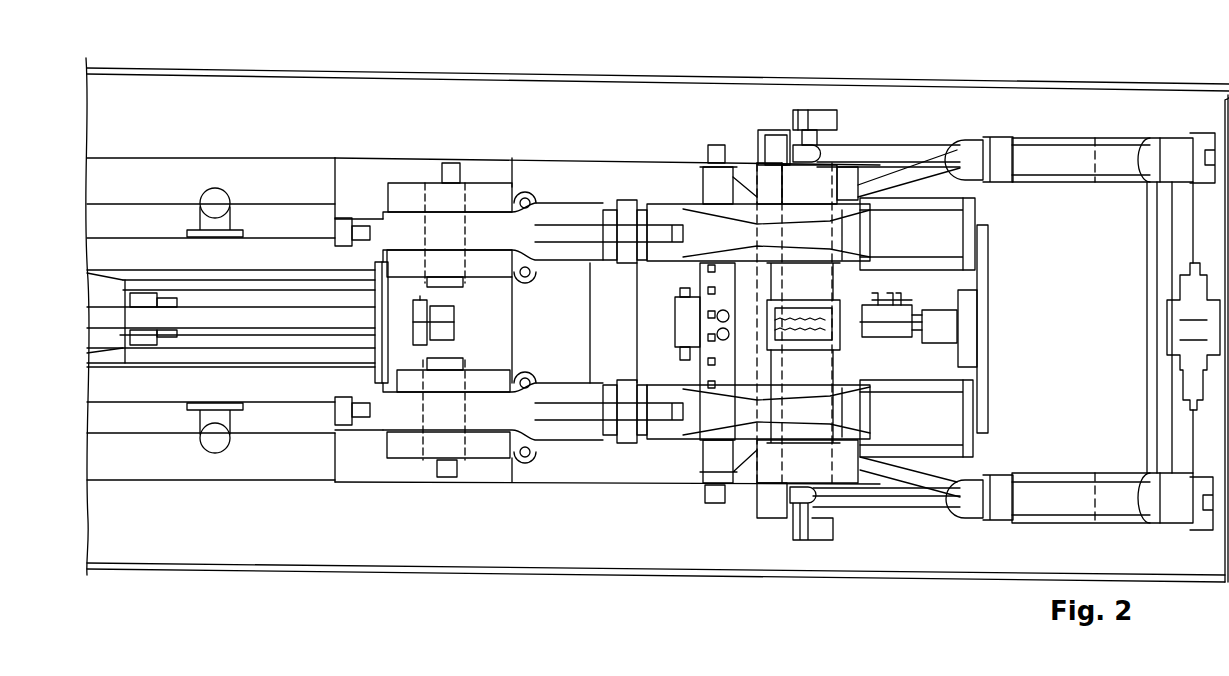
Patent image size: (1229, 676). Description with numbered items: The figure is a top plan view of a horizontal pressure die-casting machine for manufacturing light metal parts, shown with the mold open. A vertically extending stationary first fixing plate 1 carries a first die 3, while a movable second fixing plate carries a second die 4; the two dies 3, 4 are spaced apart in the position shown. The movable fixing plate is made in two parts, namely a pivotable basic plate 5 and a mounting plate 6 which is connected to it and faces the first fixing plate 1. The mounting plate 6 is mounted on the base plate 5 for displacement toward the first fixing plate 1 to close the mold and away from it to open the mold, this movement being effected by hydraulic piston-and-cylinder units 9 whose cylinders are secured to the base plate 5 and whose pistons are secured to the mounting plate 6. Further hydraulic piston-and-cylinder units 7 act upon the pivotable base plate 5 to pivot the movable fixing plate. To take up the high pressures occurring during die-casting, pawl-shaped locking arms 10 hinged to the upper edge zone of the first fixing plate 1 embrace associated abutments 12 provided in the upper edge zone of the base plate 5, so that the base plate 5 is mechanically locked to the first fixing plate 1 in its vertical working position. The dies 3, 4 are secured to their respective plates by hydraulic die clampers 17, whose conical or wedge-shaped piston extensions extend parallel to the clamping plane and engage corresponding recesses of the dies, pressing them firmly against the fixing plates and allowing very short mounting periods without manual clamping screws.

The first fixing plate 1 is at (477, 290).
The first die 3 is at (578, 270).
The second die 4 is at (655, 278).
The basic plate 5 is at (768, 180).
The mounting plate 6 is at (743, 193).
The hydraulic piston-and-cylinder units 7 is at (887, 152).
The hydraulic piston-and-cylinder units 9 is at (950, 403).
The locking arms 10 is at (713, 220).
The abutments 12 is at (795, 180).
The die clampers 17 is at (683, 315).